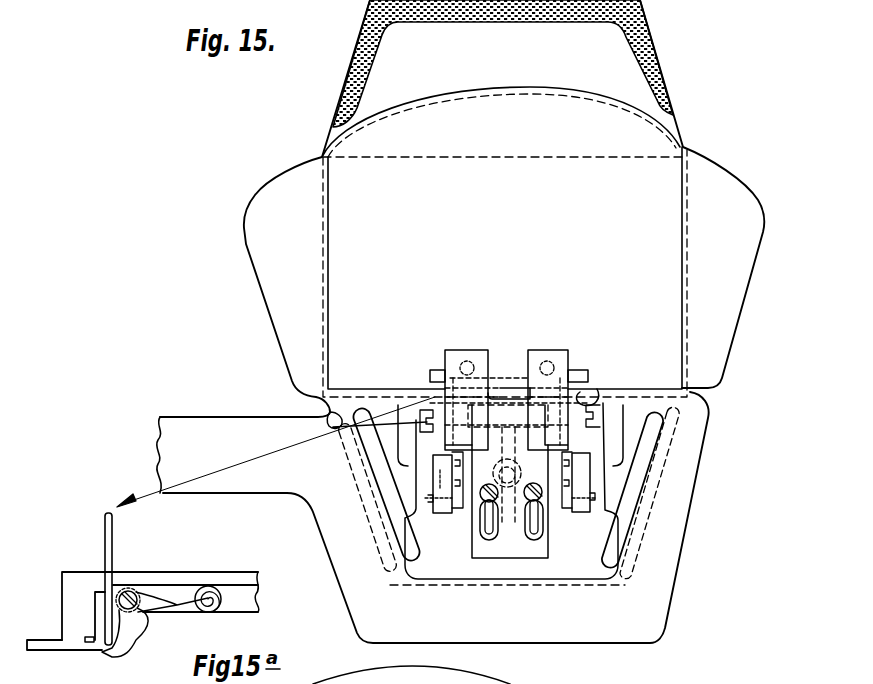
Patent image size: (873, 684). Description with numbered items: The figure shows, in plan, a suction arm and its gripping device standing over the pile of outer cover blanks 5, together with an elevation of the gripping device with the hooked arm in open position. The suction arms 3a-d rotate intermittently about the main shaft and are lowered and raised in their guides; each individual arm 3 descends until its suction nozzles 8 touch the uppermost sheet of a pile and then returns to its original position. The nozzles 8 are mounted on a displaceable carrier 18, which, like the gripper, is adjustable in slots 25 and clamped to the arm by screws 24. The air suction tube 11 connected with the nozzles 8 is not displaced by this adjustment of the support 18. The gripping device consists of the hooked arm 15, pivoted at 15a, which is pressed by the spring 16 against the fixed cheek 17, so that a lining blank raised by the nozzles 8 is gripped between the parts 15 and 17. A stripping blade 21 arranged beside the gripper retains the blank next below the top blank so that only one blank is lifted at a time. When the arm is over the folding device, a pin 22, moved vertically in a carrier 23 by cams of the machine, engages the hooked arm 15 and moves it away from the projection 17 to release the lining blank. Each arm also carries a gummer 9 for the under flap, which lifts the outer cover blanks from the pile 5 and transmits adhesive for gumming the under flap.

In FIG. 15, the pile of outer cover blanks 5 is at (661, 183).
In FIG. 15, the suction arms 3a-d is at (200, 485).
In FIG. 15, the suction arm 3 is at (276, 456).
In FIG. 15A, the suction arm 3 is at (160, 606).
In FIG. 15, the suction nozzles 8 is at (469, 365).
In FIG. 15A, the suction nozzles 8 is at (66, 645).
In FIG. 15, the gummer 9 is at (384, 540).
In FIG. 15, the air suction tube 11 is at (510, 482).
In FIG. 15, the hooked arm 15 is at (443, 433).
In FIG. 15A, the hooked arm 15 is at (124, 640).
In FIG. 15, the pivot 15a is at (767, 406).
In FIG. 15, the spring 16 is at (445, 513).
In FIG. 15A, the spring 16 is at (218, 612).
In FIG. 15, the fixed cheek 17 is at (440, 375).
In FIG. 15A, the fixed cheek 17 is at (90, 645).
In FIG. 15, the carrier 18 is at (493, 432).
In FIG. 15, the stripping blade 21 is at (510, 372).
In FIG. 15, the pin 22 is at (610, 387).
In FIG. 15A, the pin 22 is at (110, 543).
In FIG. 15, the carrier 23 is at (385, 483).
In FIG. 15, the screws 24 is at (482, 500).
In FIG. 15, the slots 25 is at (525, 505).